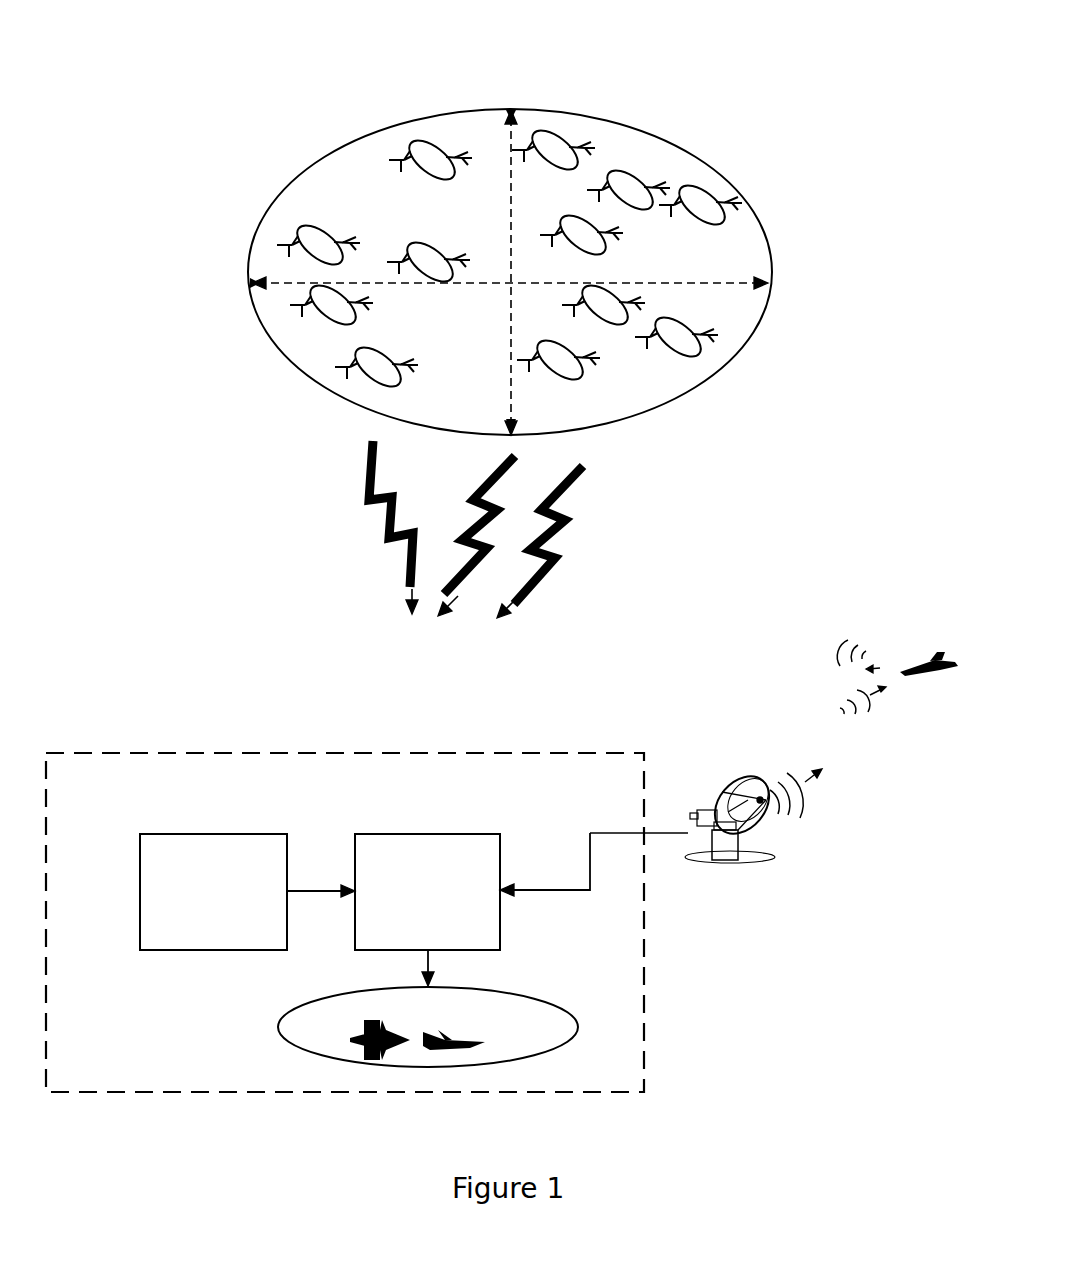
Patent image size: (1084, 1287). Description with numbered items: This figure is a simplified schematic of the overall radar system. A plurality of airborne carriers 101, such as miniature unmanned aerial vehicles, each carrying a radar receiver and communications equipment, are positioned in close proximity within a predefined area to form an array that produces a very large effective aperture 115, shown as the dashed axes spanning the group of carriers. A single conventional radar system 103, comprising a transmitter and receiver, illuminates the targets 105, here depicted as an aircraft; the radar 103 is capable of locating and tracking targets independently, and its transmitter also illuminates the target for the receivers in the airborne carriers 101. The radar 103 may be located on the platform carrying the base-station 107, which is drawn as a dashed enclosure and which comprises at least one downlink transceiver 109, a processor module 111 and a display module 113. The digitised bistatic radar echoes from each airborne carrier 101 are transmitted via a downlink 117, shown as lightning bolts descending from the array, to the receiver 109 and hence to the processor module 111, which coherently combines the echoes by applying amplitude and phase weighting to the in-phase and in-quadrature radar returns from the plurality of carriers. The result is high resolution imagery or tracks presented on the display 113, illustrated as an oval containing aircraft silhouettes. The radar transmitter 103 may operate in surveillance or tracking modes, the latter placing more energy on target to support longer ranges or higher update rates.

The airborne carriers 101 is at (292, 218).
The radar system 103 is at (775, 835).
The targets 105 is at (897, 650).
The base-station 107 is at (87, 752).
The downlink transceiver 109 is at (140, 894).
The processor module 111 is at (505, 933).
The display module 113 is at (278, 1035).
The effective aperture 115 is at (511, 108).
The downlink 117 is at (563, 540).